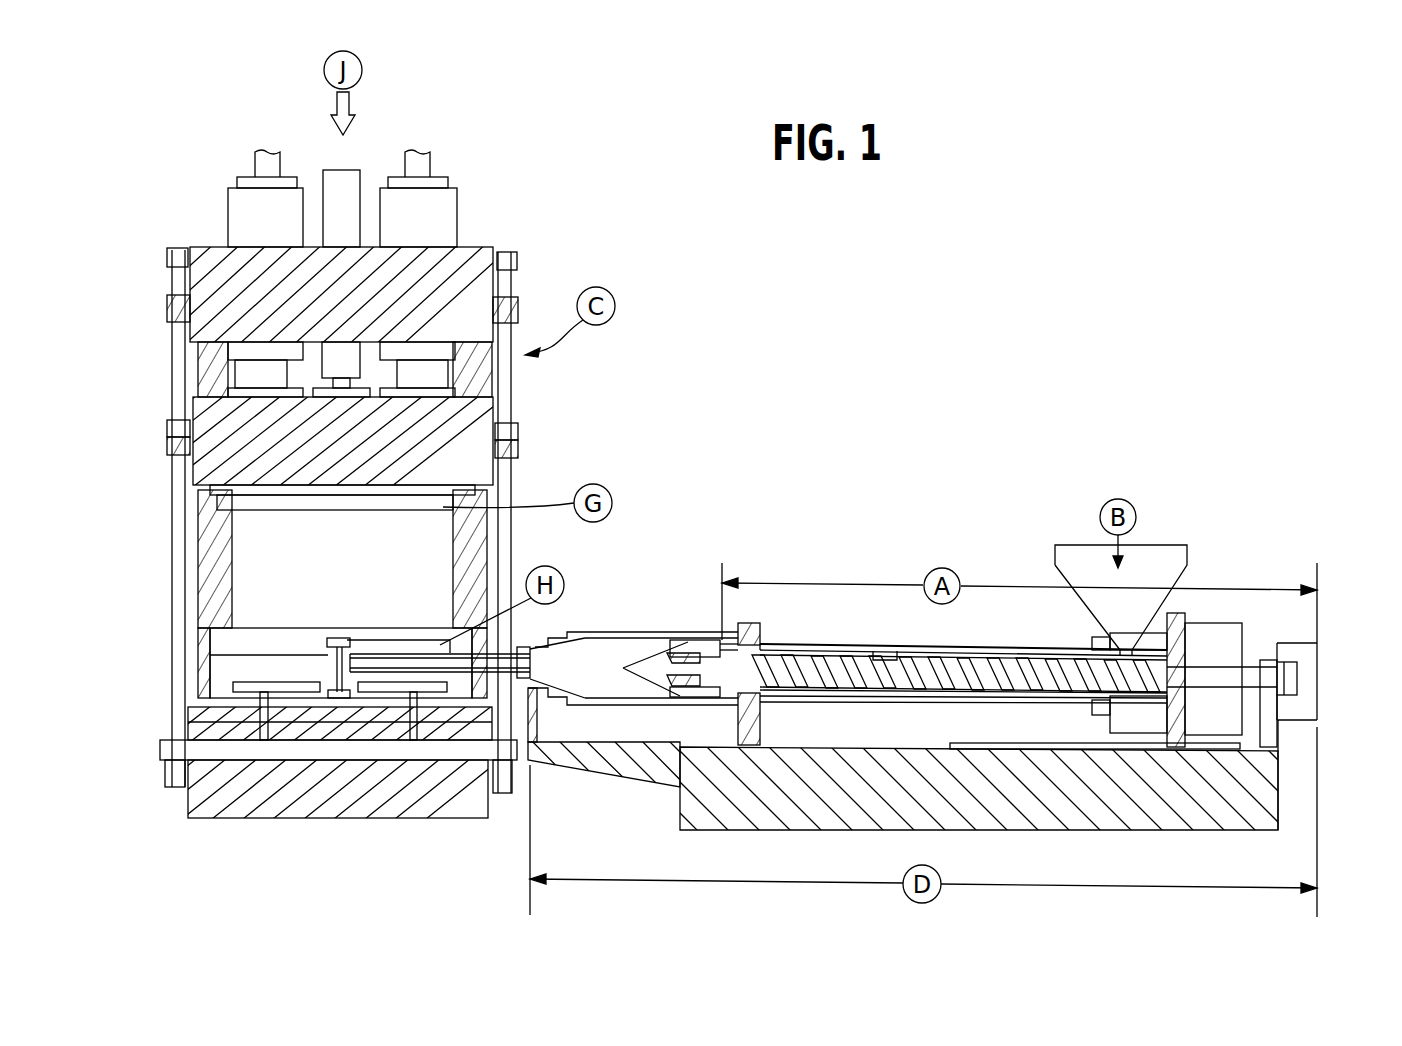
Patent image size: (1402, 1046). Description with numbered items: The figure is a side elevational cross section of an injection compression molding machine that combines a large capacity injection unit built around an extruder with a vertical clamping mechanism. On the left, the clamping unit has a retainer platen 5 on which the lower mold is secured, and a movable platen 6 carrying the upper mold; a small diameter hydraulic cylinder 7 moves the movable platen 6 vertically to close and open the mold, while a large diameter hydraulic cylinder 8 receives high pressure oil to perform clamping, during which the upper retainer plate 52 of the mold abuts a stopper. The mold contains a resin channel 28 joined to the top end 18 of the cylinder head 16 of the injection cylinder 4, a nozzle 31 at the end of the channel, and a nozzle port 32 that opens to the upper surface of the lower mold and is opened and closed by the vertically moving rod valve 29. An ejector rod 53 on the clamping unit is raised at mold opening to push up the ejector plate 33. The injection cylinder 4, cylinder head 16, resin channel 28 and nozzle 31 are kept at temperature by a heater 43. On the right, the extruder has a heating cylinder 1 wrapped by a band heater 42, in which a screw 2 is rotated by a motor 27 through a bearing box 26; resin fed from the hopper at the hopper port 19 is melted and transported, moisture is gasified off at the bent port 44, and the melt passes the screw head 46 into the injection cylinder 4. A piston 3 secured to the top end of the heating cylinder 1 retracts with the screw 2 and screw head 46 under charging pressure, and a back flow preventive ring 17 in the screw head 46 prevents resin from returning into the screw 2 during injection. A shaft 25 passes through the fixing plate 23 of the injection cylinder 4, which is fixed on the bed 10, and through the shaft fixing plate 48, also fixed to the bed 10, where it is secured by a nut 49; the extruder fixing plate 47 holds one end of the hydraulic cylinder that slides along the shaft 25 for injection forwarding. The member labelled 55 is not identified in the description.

The heating cylinder 1 is at (945, 653).
The screw 2 is at (1040, 677).
The piston 3 is at (688, 648).
The injection cylinder 4 is at (633, 637).
The retainer platen 5 is at (200, 717).
The movable platen 6 is at (458, 420).
The hydraulic cylinder 7 is at (343, 190).
The large diameter hydraulic cylinder 8 is at (243, 203).
The bed 10 is at (1036, 792).
The cylinder head 16 is at (572, 638).
The back flow preventive ring 17 is at (682, 687).
The top end 18 is at (537, 640).
The hopper port 19 is at (1117, 633).
The fixing plate 23 is at (756, 632).
The shaft 25 is at (1212, 675).
The bearing box 26 is at (1232, 652).
The motor 27 is at (1316, 645).
The resin channel 28 is at (418, 652).
The rod valve 29 is at (323, 670).
The nozzle 31 is at (343, 645).
The nozzle port 32 is at (340, 640).
The ejector plate 33 is at (302, 698).
The band heater 42 is at (828, 650).
The heater 43 is at (690, 650).
The bent port 44 is at (888, 653).
The screw head 46 is at (648, 672).
The extruder fixing plate 47 is at (1177, 618).
The shaft fixing plate 48 is at (1268, 738).
The nut 49 is at (1290, 679).
The upper retainer plate 52 is at (470, 492).
The ejector rod 53 is at (268, 732).
The slide plate 55 is at (1040, 748).